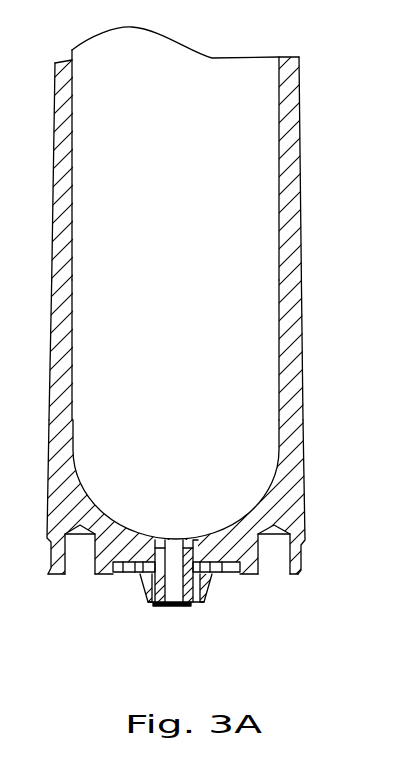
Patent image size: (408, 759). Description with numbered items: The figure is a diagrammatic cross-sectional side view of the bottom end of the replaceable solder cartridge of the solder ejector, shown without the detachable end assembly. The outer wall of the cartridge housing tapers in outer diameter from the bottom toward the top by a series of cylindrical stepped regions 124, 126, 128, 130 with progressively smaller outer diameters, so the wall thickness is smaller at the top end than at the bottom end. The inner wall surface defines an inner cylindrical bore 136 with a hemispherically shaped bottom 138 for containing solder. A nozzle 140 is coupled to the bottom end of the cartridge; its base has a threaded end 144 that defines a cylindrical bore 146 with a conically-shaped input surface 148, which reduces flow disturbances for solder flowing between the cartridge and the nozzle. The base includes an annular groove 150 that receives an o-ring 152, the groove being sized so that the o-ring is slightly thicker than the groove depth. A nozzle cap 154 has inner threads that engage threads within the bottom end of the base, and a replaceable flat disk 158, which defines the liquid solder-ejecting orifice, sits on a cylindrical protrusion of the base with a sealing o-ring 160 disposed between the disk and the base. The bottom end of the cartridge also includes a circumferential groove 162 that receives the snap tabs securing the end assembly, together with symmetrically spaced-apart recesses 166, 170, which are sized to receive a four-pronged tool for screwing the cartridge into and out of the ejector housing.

The cylindrical stepped region 124 is at (305, 470).
The cylindrical stepped region 126 is at (303, 335).
The cylindrical stepped region 128 is at (302, 222).
The cylindrical stepped region 130 is at (300, 72).
The inner cylindrical bore 136 is at (205, 208).
The hemispherically shaped bottom 138 is at (205, 422).
The nozzle 140 is at (141, 571).
The threaded end 144 is at (150, 538).
The cylindrical bore 146 is at (198, 538).
The conically-shaped input surface 148 is at (170, 538).
The annular groove 150 is at (142, 575).
The o-ring 152 is at (205, 577).
The nozzle cap 154 is at (207, 597).
The replaceable flat disk 158 is at (160, 607).
The sealing o-ring 160 is at (192, 607).
The circumferential groove 162 is at (304, 545).
The recess 166 is at (270, 575).
The recess 170 is at (72, 575).